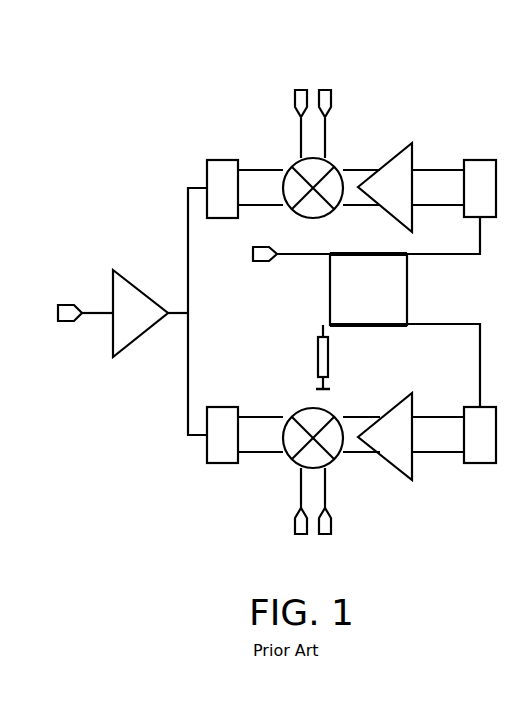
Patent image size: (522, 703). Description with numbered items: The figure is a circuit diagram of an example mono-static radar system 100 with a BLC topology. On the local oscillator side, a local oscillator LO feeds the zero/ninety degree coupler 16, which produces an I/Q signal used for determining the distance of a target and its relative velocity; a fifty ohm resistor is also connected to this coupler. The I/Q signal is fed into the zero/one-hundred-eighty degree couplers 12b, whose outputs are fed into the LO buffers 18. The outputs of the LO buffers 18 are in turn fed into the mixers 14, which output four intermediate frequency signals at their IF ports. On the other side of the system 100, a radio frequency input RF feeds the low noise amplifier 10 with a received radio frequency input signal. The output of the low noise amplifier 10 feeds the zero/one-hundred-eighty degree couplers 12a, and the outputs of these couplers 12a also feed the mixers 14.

The mono-static radar system 100 is at (77, 35).
The low noise amplifier 10 is at (127, 283).
The 0°/180° coupler 12a is at (223, 160).
The 0°/180° coupler 12b is at (470, 160).
The mixer 14 is at (291, 453).
The 0°/90° coupler 16 is at (330, 280).
The LO buffer 18 is at (410, 471).